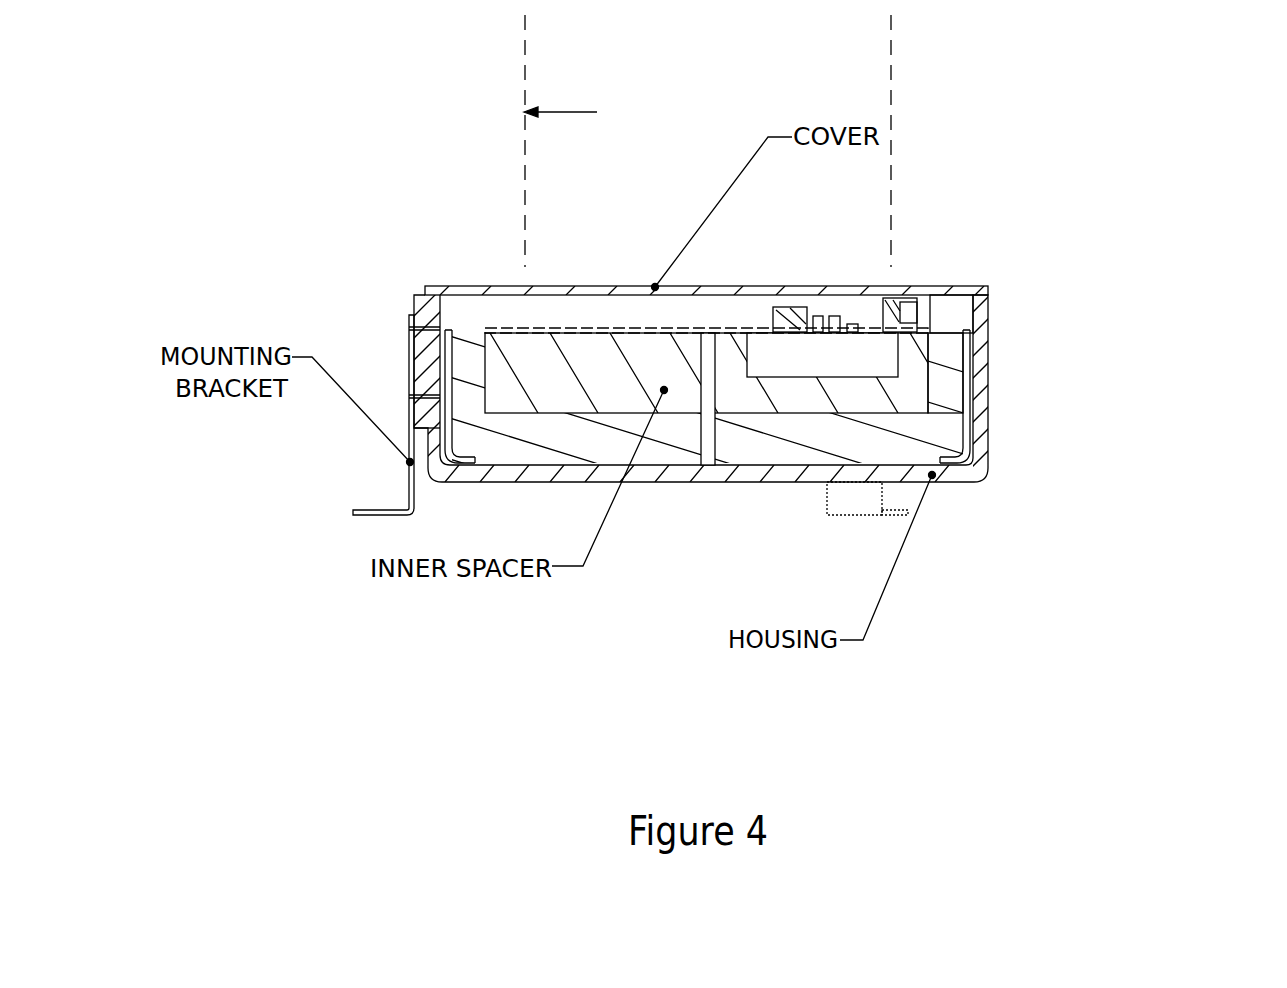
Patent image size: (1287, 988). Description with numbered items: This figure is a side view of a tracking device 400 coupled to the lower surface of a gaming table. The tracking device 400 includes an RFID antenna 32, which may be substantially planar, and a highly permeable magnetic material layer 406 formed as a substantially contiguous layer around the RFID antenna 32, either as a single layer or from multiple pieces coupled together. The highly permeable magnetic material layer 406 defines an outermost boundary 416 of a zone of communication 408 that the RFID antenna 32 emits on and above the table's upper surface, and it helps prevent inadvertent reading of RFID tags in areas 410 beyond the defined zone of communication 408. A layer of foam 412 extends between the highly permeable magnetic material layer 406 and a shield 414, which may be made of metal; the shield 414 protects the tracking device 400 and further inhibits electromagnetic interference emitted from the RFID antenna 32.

The zone of communication 408 is at (708, 141).
The outermost boundary 416 is at (580, 112).
The areas beyond each defined zone of communication 410 is at (490, 287).
The tracking device 400 is at (678, 482).
The layer of foam 412 is at (755, 445).
The RFID antenna 32 is at (792, 307).
The highly permeable magnetic material layer 406 is at (942, 296).
The shield 414 is at (964, 462).